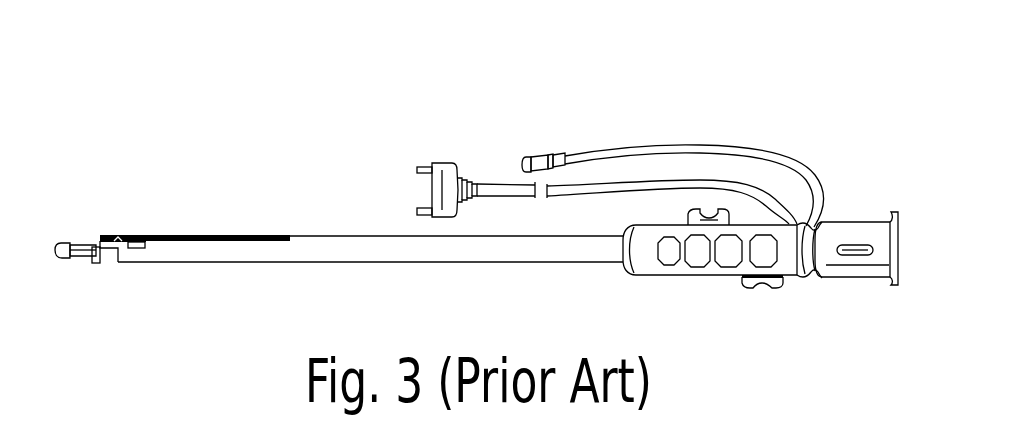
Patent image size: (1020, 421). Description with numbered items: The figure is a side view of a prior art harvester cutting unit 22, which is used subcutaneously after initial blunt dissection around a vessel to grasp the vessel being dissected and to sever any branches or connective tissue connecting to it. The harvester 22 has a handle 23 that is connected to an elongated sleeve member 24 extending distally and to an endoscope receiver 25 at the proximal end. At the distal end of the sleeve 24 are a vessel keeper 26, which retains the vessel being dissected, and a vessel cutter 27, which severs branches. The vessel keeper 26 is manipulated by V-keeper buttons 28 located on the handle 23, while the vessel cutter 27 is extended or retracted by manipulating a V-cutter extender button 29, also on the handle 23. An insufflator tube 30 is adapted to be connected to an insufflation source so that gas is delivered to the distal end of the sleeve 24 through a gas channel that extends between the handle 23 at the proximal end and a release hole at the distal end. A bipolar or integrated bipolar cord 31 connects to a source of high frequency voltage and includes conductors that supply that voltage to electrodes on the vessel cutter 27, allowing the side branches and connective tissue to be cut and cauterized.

The harvester cutting unit 22 is at (240, 127).
The handle 23 is at (685, 278).
The elongated sleeve member 24 is at (215, 263).
The endoscope receiver 25 is at (857, 220).
The vessel keeper (V-keeper) 26 is at (80, 262).
The vessel cutter (V-cutter) 27 is at (120, 236).
The V-keeper buttons 28 is at (713, 210).
The V-cutter extender button 29 is at (772, 288).
The insufflator tube 30 is at (777, 155).
The bipolar cord 31 is at (608, 185).